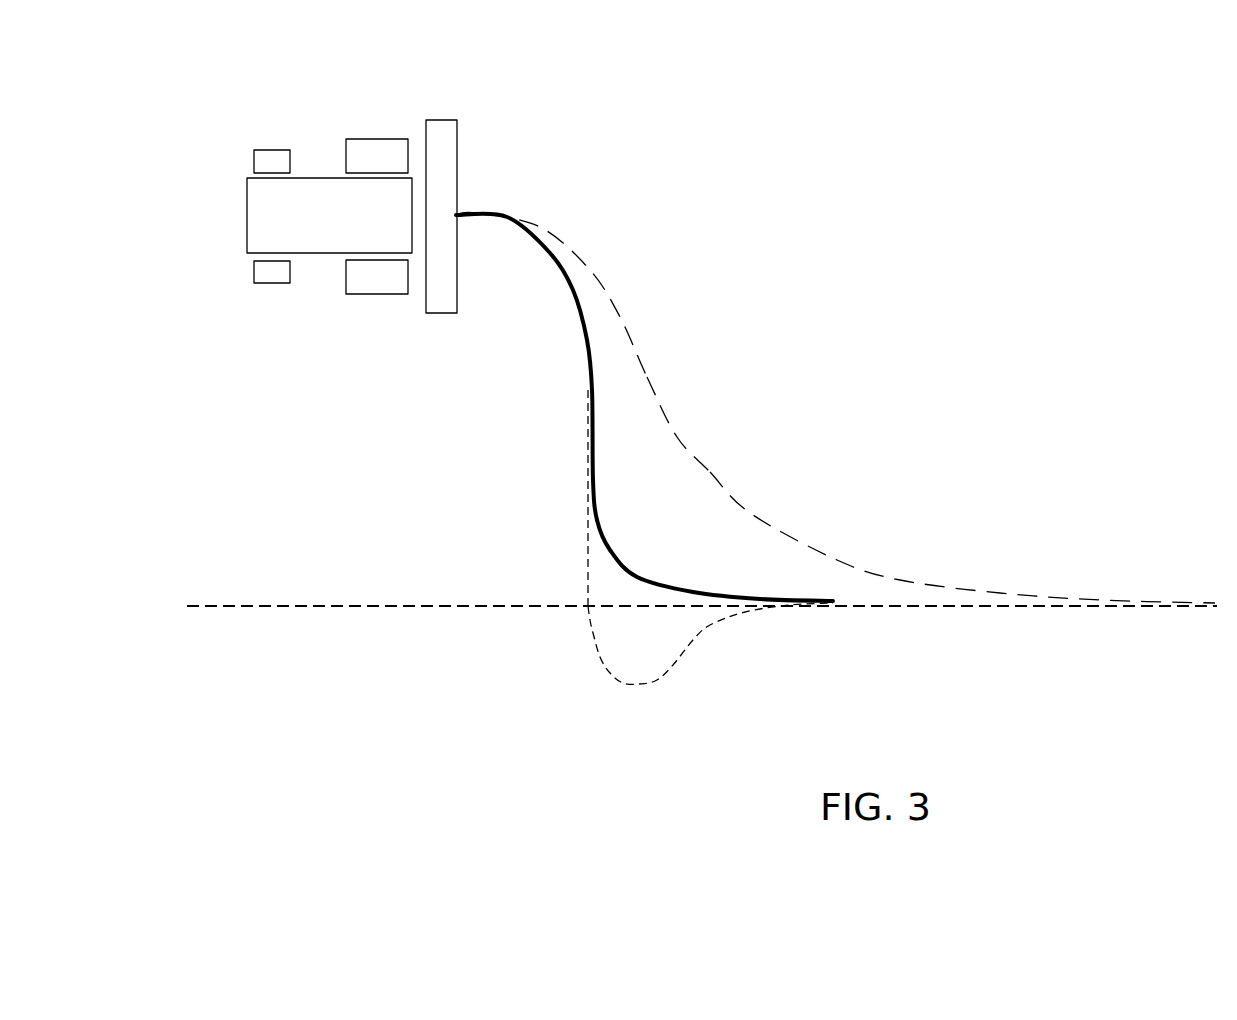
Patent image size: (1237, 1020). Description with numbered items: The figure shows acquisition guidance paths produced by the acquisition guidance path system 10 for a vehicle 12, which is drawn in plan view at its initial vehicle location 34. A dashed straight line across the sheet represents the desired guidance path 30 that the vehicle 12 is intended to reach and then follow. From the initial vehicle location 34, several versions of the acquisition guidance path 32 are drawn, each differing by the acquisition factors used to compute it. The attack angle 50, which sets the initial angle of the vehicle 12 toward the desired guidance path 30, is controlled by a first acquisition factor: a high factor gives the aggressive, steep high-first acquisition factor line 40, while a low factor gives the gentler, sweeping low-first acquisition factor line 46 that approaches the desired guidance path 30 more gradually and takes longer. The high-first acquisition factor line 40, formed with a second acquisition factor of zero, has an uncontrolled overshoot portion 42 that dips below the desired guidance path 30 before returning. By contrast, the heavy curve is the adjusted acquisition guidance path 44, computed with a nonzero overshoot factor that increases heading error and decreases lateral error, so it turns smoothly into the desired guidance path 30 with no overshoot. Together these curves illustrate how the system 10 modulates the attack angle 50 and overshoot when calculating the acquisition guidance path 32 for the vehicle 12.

The acquisition guidance path system 10 is at (522, 103).
The vehicle 12 is at (316, 205).
The desired guidance path 30 is at (318, 605).
The acquisition guidance path 32 is at (760, 518).
The initial vehicle location 34 is at (455, 325).
The high-first acquisition factor line 40 is at (588, 583).
The uncontrolled overshoot portion 42 is at (667, 671).
The adjusted acquisition guidance path 44 is at (632, 567).
The low-first acquisition factor line 46 is at (617, 308).
The attack angle 50 is at (653, 390).